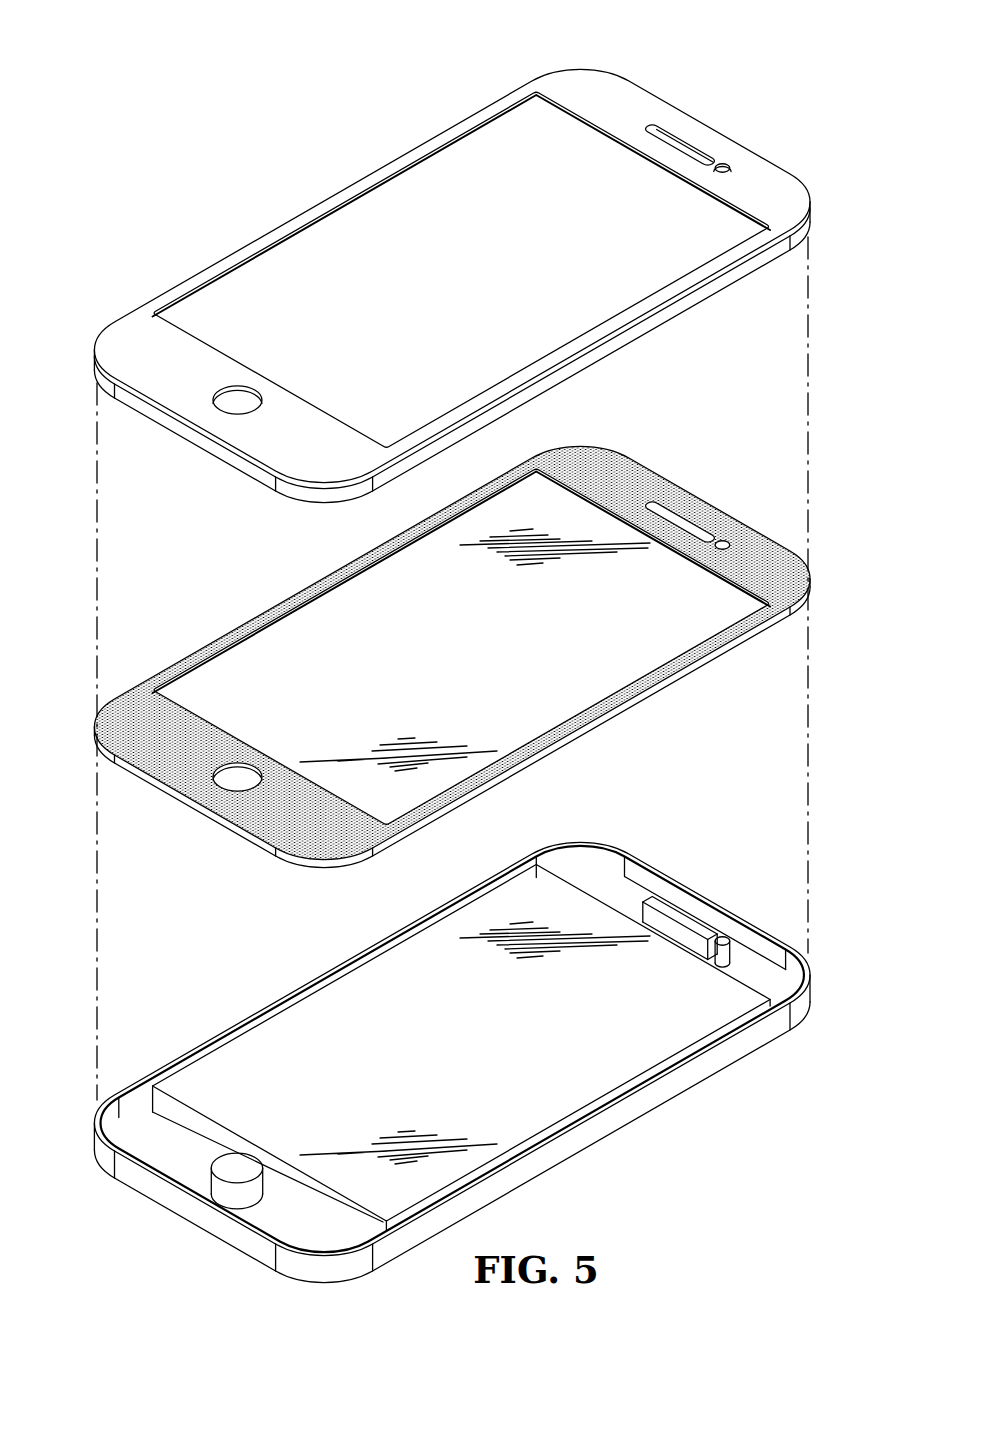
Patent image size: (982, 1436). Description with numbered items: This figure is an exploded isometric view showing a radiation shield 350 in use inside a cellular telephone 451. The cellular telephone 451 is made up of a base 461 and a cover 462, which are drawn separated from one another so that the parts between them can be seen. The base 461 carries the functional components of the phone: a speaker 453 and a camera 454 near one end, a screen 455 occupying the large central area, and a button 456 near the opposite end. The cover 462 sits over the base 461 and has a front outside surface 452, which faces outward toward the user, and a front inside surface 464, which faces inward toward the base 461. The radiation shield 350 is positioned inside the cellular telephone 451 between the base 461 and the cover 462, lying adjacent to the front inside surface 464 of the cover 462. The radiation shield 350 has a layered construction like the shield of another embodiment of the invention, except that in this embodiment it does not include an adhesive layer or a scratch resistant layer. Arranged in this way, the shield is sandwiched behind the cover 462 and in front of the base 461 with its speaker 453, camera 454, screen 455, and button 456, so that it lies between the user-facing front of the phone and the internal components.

The front outside surface 452 is at (452, 271).
The cover 462 is at (660, 308).
The front inside surface 464 is at (220, 453).
The radiation shield 350 is at (712, 497).
The cellular telephone 451 is at (452, 1062).
The base 461 is at (662, 1088).
The speaker 453 is at (672, 907).
The camera 454 is at (723, 938).
The screen 455 is at (461, 919).
The button 456 is at (240, 1162).